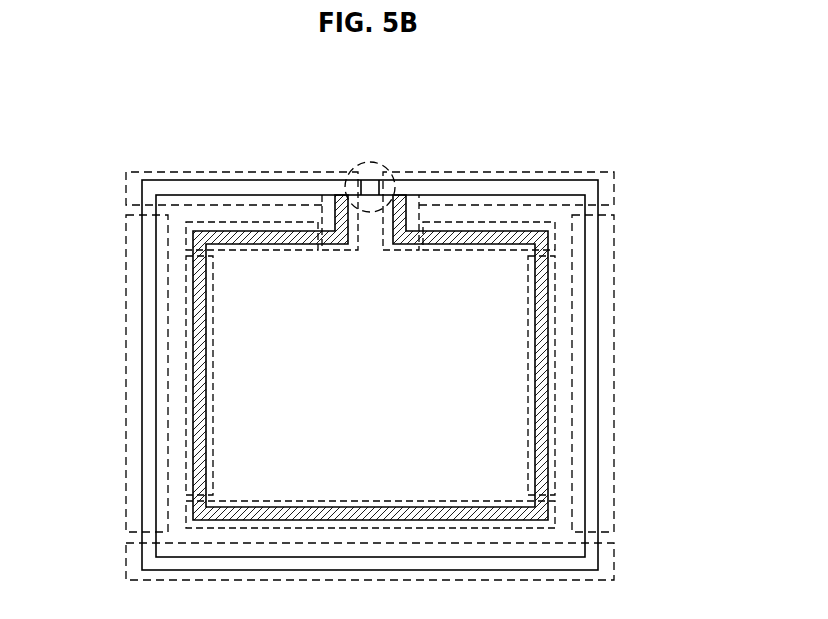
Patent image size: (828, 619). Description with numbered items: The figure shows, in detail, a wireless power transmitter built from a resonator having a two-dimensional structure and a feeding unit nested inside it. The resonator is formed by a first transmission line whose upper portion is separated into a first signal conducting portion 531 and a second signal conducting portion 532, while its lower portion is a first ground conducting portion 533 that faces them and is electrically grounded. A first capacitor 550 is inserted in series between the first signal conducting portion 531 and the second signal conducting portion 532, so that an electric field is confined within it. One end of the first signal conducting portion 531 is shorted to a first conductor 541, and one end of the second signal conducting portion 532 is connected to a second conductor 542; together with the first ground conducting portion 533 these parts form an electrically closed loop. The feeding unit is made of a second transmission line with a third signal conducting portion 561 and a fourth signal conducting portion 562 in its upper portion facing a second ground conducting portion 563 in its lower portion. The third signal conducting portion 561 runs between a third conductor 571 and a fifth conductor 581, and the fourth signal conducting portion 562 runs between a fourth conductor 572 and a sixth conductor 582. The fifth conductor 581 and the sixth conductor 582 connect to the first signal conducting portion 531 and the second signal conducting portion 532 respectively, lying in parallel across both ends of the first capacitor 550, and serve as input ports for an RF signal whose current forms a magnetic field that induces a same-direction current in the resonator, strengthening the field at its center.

The first signal conducting portion 531 is at (240, 171).
The second signal conducting portion 532 is at (496, 171).
The first ground conducting portion 533 is at (615, 563).
The first conductor 541 is at (125, 376).
The second conductor 542 is at (615, 376).
The first capacitor 550 is at (370, 162).
The third signal conducting portion 561 is at (262, 250).
The fourth signal conducting portion 562 is at (480, 250).
The second ground conducting portion 563 is at (369, 500).
The third conductor 571 is at (217, 397).
The fourth conductor 572 is at (524, 397).
The fifth conductor 581 is at (340, 250).
The sixth conductor 582 is at (398, 250).